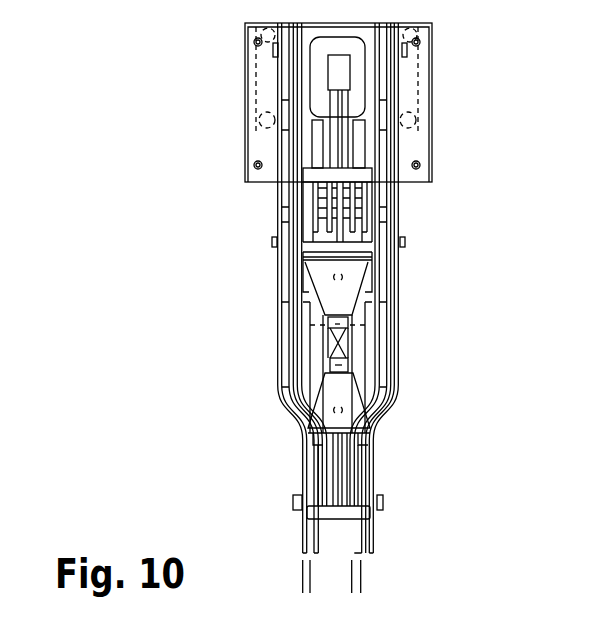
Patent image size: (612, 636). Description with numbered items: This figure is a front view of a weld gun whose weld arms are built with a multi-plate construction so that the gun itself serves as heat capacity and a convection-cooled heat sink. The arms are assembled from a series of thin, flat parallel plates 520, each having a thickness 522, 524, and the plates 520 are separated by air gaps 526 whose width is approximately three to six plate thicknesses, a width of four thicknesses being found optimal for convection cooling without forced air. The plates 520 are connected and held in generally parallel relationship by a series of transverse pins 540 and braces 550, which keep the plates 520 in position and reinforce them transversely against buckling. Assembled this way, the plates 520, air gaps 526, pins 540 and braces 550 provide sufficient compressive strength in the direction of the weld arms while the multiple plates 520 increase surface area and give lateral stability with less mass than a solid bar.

The flat parallel plates 520 is at (298, 395).
The plate thickness 522 is at (335, 576).
The plate thickness 524 is at (316, 573).
The air gaps 526 is at (367, 532).
The transverse pins 540 is at (273, 52).
The braces 550 is at (352, 180).